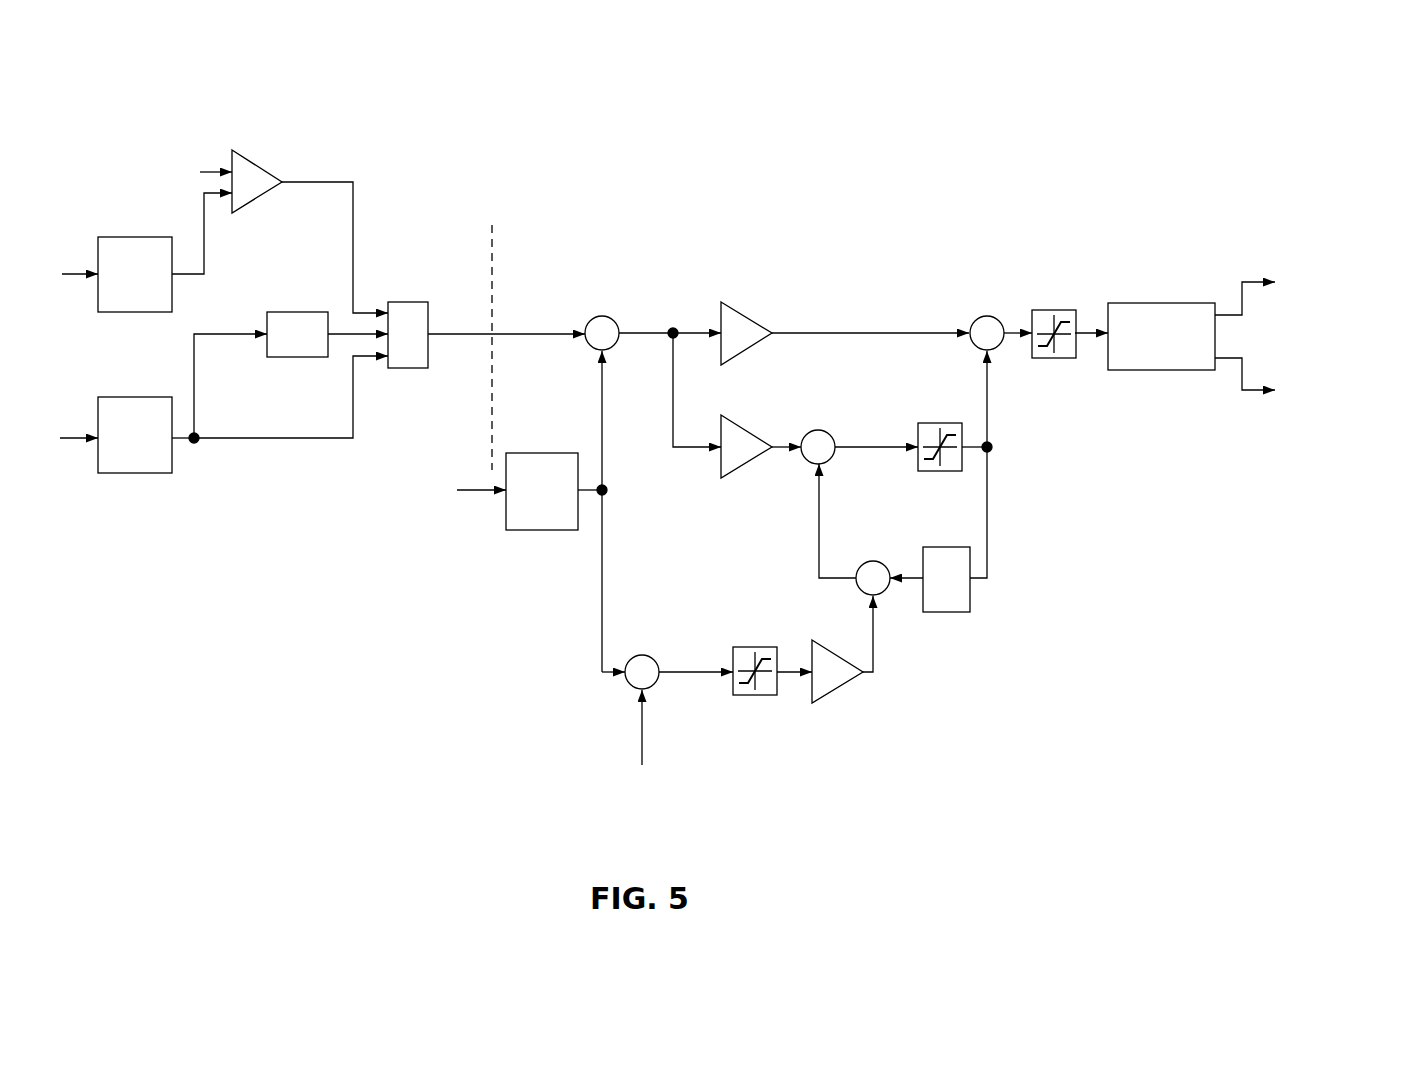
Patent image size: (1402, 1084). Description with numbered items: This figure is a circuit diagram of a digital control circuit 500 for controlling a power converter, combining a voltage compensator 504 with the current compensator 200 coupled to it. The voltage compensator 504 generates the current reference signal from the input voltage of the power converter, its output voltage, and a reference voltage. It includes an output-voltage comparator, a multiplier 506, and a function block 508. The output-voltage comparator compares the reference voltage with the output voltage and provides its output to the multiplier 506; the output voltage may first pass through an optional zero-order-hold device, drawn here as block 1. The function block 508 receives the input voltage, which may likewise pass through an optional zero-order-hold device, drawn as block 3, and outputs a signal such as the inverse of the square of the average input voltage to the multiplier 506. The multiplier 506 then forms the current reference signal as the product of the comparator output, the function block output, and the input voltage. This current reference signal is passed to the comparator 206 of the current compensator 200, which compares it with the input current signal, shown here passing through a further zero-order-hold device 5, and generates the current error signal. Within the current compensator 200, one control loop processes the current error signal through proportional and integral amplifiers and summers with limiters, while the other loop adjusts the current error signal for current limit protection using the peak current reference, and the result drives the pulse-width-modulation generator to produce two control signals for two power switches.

The digital control circuit 500 is at (1022, 130).
The voltage compensator 504 is at (428, 195).
The multiplier 506 is at (397, 301).
The function block 508 is at (282, 357).
The current compensator 200 is at (750, 218).
The comparator 206 is at (597, 318).
The zero-order hold block 1 is at (135, 258).
The zero-order hold block 3 is at (135, 452).
The zero-order hold block 5 is at (542, 510).